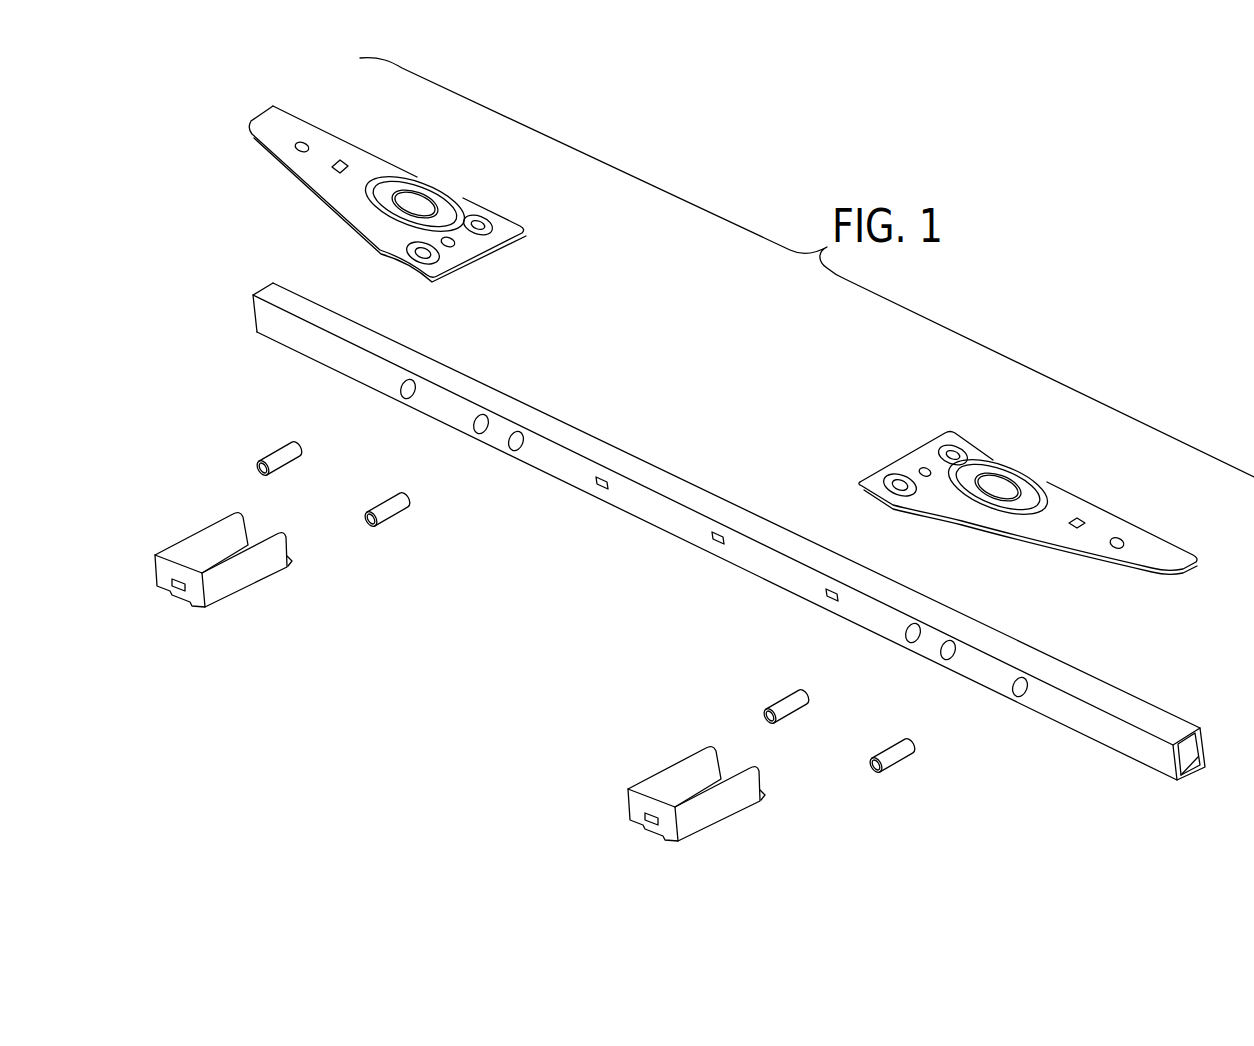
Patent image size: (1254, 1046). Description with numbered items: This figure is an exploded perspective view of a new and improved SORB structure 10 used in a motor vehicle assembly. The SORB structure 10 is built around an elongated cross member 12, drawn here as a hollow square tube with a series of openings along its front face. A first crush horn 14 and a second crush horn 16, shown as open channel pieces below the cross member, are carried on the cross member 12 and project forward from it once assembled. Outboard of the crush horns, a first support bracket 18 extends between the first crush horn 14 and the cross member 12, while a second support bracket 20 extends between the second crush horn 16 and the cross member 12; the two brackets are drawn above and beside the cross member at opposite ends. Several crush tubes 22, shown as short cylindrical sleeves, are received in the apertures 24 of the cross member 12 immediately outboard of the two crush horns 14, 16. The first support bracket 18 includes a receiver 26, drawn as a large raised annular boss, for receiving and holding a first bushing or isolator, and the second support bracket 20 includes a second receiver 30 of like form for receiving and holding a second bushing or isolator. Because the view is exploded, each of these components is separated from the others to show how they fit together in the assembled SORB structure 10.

The SORB structure 10 is at (320, 712).
The cross member 12 is at (612, 448).
The first crush horn 14 is at (235, 580).
The second crush horn 16 is at (722, 807).
The first support bracket 18 is at (350, 190).
The second support bracket 20 is at (1027, 522).
The crush tubes 22 is at (275, 454).
The apertures 24 is at (404, 392).
The receiver 26 is at (430, 197).
The second receiver 30 is at (1010, 472).